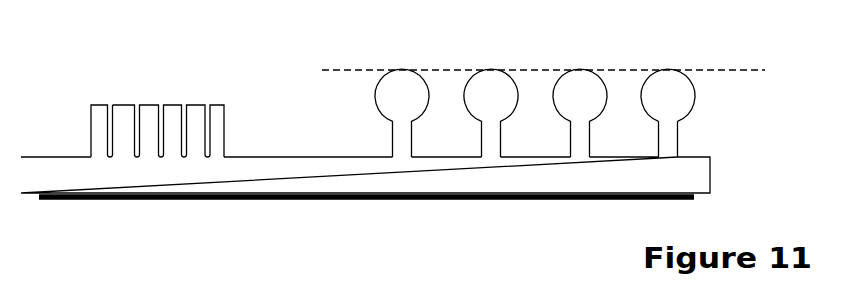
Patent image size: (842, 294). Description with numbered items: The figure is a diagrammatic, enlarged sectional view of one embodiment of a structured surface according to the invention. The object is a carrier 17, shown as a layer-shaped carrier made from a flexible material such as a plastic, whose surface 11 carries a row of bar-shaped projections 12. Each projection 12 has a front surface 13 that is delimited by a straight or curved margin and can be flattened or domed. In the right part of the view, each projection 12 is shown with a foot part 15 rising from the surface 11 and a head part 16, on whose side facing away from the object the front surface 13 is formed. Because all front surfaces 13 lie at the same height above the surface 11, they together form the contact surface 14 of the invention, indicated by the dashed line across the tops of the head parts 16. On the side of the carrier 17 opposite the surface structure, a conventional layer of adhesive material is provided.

The surface 11 is at (253, 157).
The projections 12 is at (91, 138).
The front surface 13 is at (100, 103).
The contact surface 14 is at (552, 68).
The foot part 15 is at (678, 145).
The head part 16 is at (668, 95).
The carrier 17 is at (683, 187).